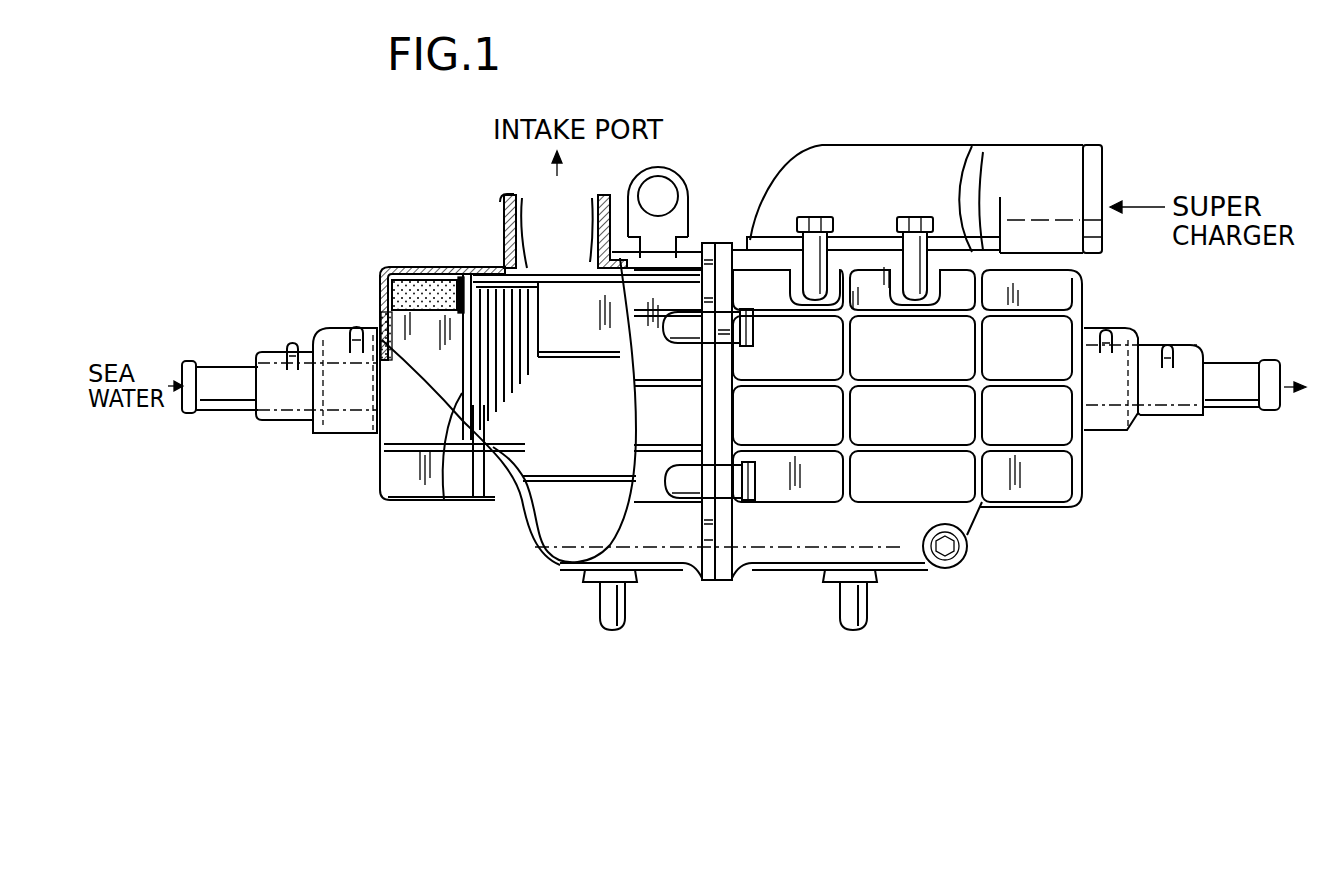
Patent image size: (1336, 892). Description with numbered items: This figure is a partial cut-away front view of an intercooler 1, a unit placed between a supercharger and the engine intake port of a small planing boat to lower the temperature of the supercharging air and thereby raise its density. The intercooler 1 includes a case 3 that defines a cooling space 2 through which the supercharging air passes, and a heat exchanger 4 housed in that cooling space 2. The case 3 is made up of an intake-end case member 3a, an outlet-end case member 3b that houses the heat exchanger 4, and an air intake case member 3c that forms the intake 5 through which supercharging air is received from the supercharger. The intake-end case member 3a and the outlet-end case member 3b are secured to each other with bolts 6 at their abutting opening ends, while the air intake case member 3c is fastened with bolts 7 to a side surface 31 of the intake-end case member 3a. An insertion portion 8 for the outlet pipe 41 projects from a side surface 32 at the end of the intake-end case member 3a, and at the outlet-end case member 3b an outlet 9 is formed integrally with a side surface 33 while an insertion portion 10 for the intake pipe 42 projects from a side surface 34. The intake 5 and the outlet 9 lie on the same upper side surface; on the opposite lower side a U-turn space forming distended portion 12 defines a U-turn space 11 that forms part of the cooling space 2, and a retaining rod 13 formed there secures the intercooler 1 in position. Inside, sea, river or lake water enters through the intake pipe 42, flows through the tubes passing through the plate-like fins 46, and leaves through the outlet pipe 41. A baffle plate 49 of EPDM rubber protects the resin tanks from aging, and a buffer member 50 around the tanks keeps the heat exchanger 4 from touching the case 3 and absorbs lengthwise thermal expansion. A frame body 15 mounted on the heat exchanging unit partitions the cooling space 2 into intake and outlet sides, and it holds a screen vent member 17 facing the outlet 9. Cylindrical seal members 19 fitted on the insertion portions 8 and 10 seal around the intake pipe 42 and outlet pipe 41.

The intercooler 1 is at (766, 134).
The cooling space 2 is at (547, 433).
The case 3 is at (912, 548).
The intake-end case member 3a is at (1075, 297).
The outlet-end case member 3b is at (527, 537).
The air intake case member 3c is at (921, 150).
The heat exchanger 4 is at (480, 268).
The intake 5 is at (1068, 177).
The bolts 6 is at (758, 480).
The bolts 7 is at (813, 215).
The insertion portion 8 is at (1110, 430).
The outlet 9 is at (500, 206).
The insertion portion 10 is at (352, 430).
The U-turn space 11 is at (578, 513).
The U-turn space forming distended portion 12 is at (672, 545).
The retaining rod 13 is at (617, 616).
The frame body 15 is at (585, 298).
The screen vent member 17 is at (507, 195).
The cylindrical seal members 19 is at (318, 410).
The side surface 31 is at (967, 163).
The side surface 32 is at (1083, 465).
The side surface 33 is at (425, 267).
The side surface 34 is at (380, 467).
The outlet pipe 41 is at (1237, 395).
The intake pipe 42 is at (225, 392).
The fins 46 is at (530, 375).
The baffle plate 49 is at (444, 500).
The buffer member 50 is at (395, 298).